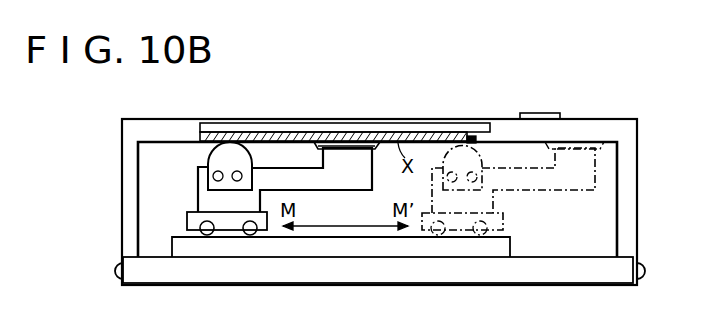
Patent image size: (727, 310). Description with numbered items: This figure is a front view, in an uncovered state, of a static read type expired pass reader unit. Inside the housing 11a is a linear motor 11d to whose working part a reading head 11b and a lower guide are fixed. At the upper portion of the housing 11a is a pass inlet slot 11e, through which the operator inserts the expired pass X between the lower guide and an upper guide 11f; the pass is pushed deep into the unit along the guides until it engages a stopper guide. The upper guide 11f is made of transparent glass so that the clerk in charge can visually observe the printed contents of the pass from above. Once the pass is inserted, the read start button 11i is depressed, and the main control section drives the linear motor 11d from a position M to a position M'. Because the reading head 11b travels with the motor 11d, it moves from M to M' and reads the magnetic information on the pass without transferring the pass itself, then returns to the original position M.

The housing 11a is at (612, 119).
The reading head 11b is at (209, 156).
The linear motor 11d is at (218, 218).
The pass inlet slot 11e is at (343, 137).
The upper guide 11f is at (444, 130).
The read start button 11i is at (537, 113).